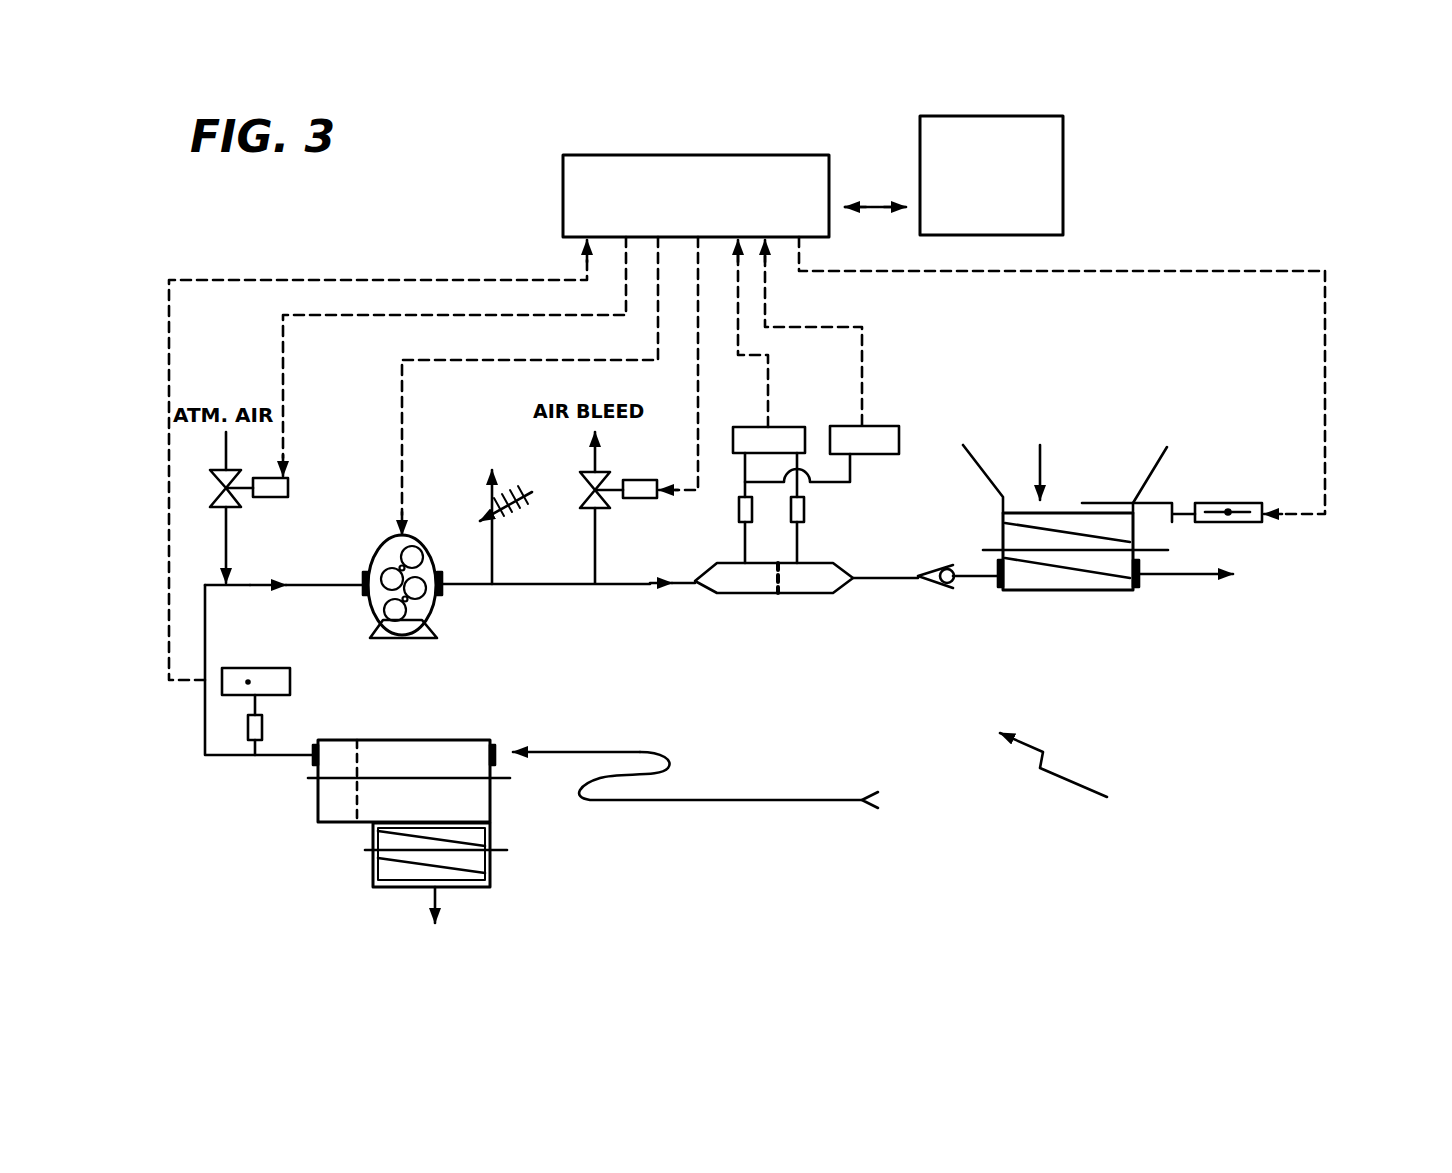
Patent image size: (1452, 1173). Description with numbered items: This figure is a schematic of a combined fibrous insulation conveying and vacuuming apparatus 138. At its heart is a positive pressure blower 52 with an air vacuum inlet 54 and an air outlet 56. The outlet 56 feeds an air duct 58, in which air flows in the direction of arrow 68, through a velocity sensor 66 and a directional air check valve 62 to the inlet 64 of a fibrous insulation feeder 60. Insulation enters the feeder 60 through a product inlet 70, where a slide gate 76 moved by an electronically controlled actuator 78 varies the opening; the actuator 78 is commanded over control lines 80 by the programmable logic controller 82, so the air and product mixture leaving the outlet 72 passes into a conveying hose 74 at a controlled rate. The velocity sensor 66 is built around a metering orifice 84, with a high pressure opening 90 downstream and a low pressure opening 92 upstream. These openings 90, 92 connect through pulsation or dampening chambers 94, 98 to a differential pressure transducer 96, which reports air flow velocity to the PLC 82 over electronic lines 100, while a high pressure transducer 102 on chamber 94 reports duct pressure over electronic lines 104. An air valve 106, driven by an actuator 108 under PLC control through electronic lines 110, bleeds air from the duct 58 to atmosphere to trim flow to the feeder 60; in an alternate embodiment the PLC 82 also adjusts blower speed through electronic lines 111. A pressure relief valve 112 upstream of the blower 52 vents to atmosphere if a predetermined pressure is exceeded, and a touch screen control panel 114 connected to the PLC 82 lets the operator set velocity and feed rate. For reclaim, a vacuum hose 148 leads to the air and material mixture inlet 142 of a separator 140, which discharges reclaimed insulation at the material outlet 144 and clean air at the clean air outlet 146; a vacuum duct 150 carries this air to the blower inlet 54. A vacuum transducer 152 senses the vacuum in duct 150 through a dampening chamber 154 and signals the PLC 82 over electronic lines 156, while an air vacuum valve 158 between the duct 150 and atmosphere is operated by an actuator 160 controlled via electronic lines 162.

The blower 52 is at (370, 552).
The air vacuum inlet 54 is at (362, 590).
The air outlet 56 is at (445, 595).
The air duct 58 is at (520, 584).
The fibrous insulation feeder 60 is at (1103, 594).
The directional air check valve 62 is at (940, 588).
The inlet 64 is at (996, 566).
The velocity sensor 66 is at (707, 592).
The arrow 68 is at (660, 590).
The product inlet 70 is at (1085, 482).
The air and product mixture outlet 72 is at (1142, 584).
The conveying hose 74 is at (1192, 576).
The slide gate 76 is at (1153, 503).
The actuator 78 is at (1243, 503).
The control lines 80 is at (1108, 271).
The programmable logic controller 82 is at (728, 150).
The metering orifice 84 is at (785, 580).
The high pressure opening 90 is at (745, 563).
The low pressure opening 92 is at (800, 563).
The pulsation or dampening chamber 94 is at (740, 510).
The differential pressure transducer 96 is at (790, 427).
The pulsation or dampening chamber 98 is at (805, 510).
The electronic lines 100 is at (768, 360).
The high pressure transducer 102 is at (893, 426).
The electronic lines 104 is at (808, 327).
The air valve 106 is at (585, 498).
The actuator 108 is at (640, 480).
The electronic lines 110 is at (698, 372).
The electronic lines 111 is at (490, 360).
The pressure relief valve 112 is at (478, 508).
The touch screen control panel 114 is at (992, 114).
The combined fibrous insulation conveying and vacuuming apparatus 138 is at (1079, 777).
The fibrous insulation material separator 140 is at (355, 826).
The air and material mixture inlet 142 is at (497, 740).
The fibrous insulation material outlet 144 is at (487, 890).
The clean air outlet 146 is at (310, 762).
The vacuum hose 148 is at (670, 758).
The vacuum duct 150 is at (235, 757).
The vacuum transducer 152 is at (268, 668).
The pulsation or dampening chamber 154 is at (264, 728).
The electronic lines 156 is at (270, 280).
The air vacuum valve 158 is at (236, 508).
The actuator 160 is at (290, 488).
The electronic lines 162 is at (283, 334).